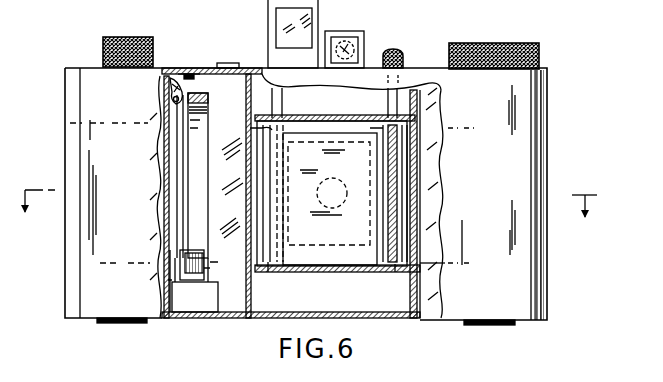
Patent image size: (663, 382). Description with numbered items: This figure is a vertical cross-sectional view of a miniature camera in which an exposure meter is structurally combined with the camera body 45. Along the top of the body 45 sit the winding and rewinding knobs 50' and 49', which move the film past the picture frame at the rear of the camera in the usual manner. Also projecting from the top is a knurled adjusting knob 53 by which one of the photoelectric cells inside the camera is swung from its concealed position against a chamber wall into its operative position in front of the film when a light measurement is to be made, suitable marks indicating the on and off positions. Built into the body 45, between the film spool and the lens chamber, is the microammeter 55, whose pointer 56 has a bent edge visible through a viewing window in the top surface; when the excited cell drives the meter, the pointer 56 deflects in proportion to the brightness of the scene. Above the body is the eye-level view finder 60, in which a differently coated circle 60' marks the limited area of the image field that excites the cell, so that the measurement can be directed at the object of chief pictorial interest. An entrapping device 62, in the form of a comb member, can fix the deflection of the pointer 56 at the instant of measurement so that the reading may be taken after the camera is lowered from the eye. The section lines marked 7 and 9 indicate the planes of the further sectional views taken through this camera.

The camera body 45 is at (538, 270).
The rewinding knob 49' is at (113, 43).
The winding knob 50' is at (500, 46).
The knurled adjusting knob 53 is at (409, 40).
The microammeter 55 is at (202, 242).
The pointer 56 is at (191, 73).
The view finder 60 is at (355, 38).
The differently coated circle 60' is at (342, 33).
The entrapping device 62 is at (170, 82).
The section line 7- 7 is at (306, 219).
The section line 9- 9 is at (232, 92).